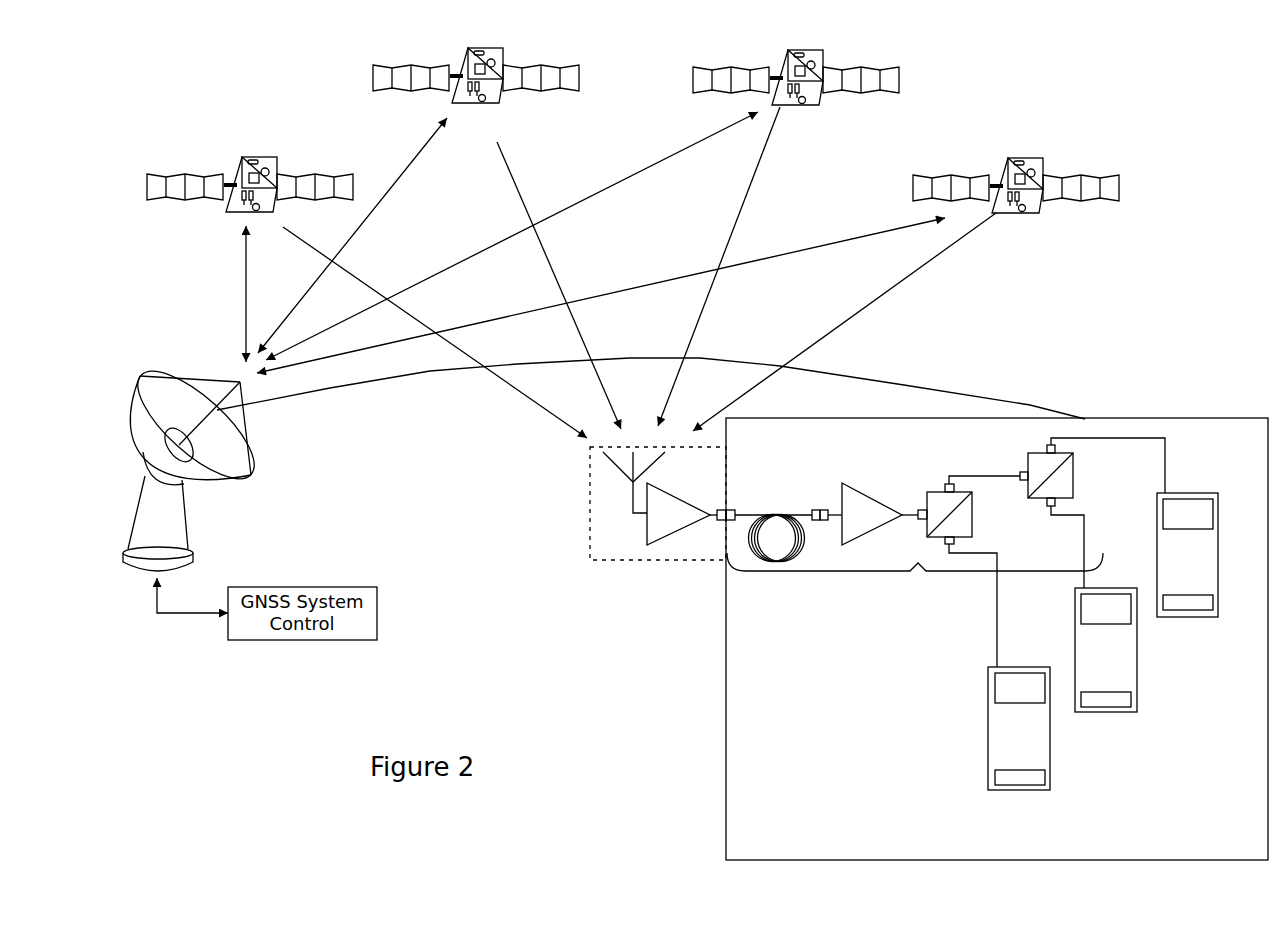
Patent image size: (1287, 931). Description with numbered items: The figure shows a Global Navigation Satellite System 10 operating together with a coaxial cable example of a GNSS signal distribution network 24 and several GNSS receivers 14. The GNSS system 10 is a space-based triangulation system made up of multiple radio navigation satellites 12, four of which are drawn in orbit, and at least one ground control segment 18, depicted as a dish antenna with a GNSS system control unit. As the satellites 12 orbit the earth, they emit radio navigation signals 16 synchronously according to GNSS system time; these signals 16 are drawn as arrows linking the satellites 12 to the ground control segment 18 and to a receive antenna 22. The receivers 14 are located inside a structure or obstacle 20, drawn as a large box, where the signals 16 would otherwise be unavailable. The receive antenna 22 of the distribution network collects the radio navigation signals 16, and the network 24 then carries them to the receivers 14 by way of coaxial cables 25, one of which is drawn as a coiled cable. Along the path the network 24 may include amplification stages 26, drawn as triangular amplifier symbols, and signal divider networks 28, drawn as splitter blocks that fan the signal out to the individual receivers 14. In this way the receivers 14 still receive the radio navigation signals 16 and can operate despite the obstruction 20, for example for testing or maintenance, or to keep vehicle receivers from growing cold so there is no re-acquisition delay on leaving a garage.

The Global Navigation Satellite System (GNSS) 10 is at (253, 56).
The radio navigation satellite 12 is at (225, 213).
The GNSS receiver 14 is at (1052, 792).
The radio navigation signal 16 is at (621, 272).
The ground control segment 18 is at (193, 528).
The structure or obstacle 20 is at (742, 609).
The receive antenna 22 is at (589, 562).
The GNSS signal distribution network 24 is at (915, 580).
The coaxial cable 25 is at (782, 518).
The amplification stage 26 is at (858, 486).
The signal divider network 28 is at (1041, 552).